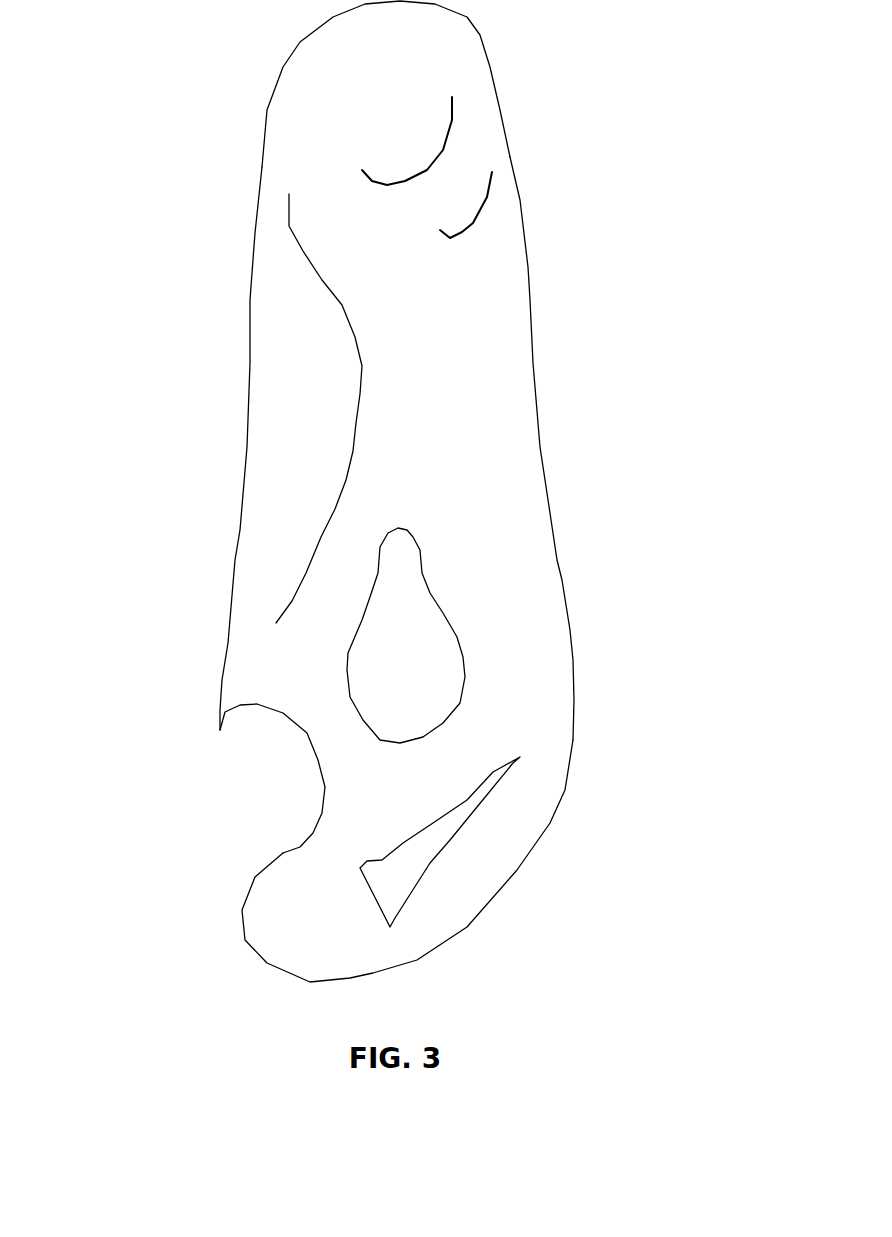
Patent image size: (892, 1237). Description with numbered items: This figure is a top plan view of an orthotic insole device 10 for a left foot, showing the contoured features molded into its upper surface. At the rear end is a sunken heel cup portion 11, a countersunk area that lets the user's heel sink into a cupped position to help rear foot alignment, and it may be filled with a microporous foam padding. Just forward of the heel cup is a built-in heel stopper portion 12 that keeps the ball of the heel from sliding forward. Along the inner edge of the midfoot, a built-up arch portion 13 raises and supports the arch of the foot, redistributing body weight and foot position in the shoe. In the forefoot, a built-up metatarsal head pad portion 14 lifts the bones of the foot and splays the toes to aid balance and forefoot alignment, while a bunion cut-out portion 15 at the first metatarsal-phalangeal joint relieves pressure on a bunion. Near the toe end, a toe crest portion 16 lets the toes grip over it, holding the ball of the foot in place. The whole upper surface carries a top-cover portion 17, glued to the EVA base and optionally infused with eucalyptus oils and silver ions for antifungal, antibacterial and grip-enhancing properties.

The orthotic insole device 10 is at (190, 82).
The sunken heel cup portion 11 is at (417, 91).
The heel stopper portion 12 is at (497, 215).
The built-up arch portion 13 is at (277, 368).
The built-up metatarsal head pad portion 14 is at (445, 681).
The bunion cut-out portion 15 is at (268, 792).
The toe crest portion 16 is at (423, 863).
The top-cover portion 17 is at (503, 439).